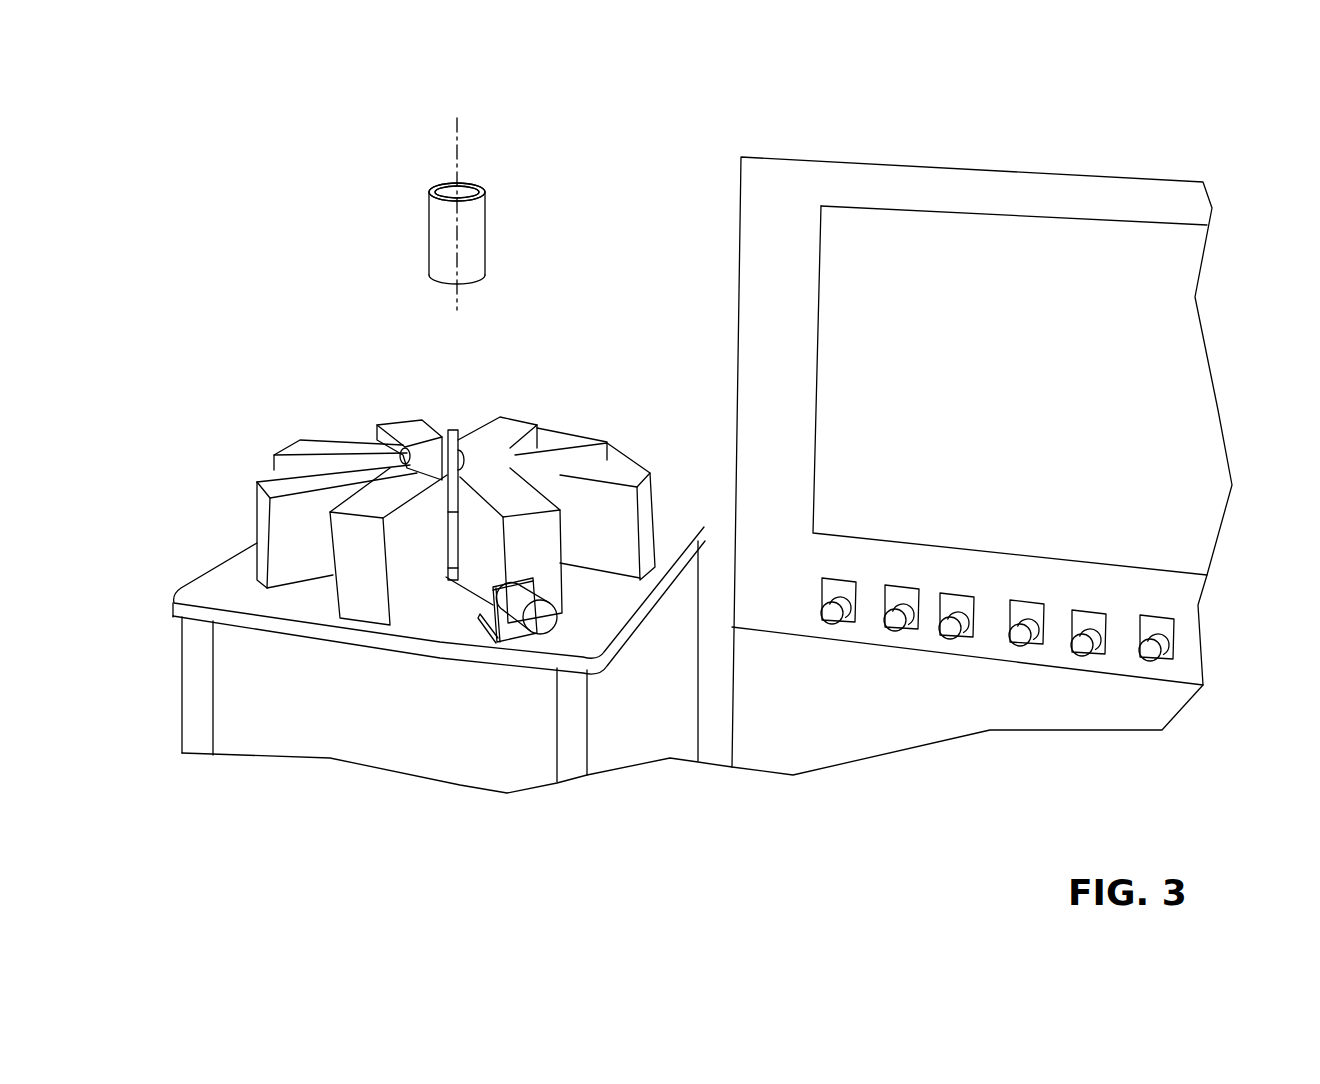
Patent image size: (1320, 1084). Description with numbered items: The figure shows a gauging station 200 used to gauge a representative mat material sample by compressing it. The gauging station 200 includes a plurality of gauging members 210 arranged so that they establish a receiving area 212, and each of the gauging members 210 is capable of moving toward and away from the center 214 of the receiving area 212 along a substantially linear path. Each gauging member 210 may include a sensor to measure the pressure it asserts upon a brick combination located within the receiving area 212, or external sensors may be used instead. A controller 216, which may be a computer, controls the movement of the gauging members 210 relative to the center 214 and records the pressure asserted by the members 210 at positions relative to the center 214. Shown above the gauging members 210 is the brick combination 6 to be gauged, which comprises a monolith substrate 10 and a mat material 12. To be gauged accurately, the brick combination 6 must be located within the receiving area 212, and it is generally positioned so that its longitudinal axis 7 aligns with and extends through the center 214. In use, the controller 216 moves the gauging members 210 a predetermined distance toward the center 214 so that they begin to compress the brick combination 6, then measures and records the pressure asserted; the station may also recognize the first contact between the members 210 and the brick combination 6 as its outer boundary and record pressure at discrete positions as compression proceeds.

The brick combination 6 is at (500, 222).
The longitudinal axis 7 is at (455, 130).
The monolith substrate 10 is at (465, 192).
The mat material 12 is at (487, 193).
The gauging station 200 is at (1225, 347).
The gauging members 210 is at (547, 438).
The receiving area 212 is at (437, 457).
The center 214 is at (472, 463).
The controller 216 is at (1192, 603).